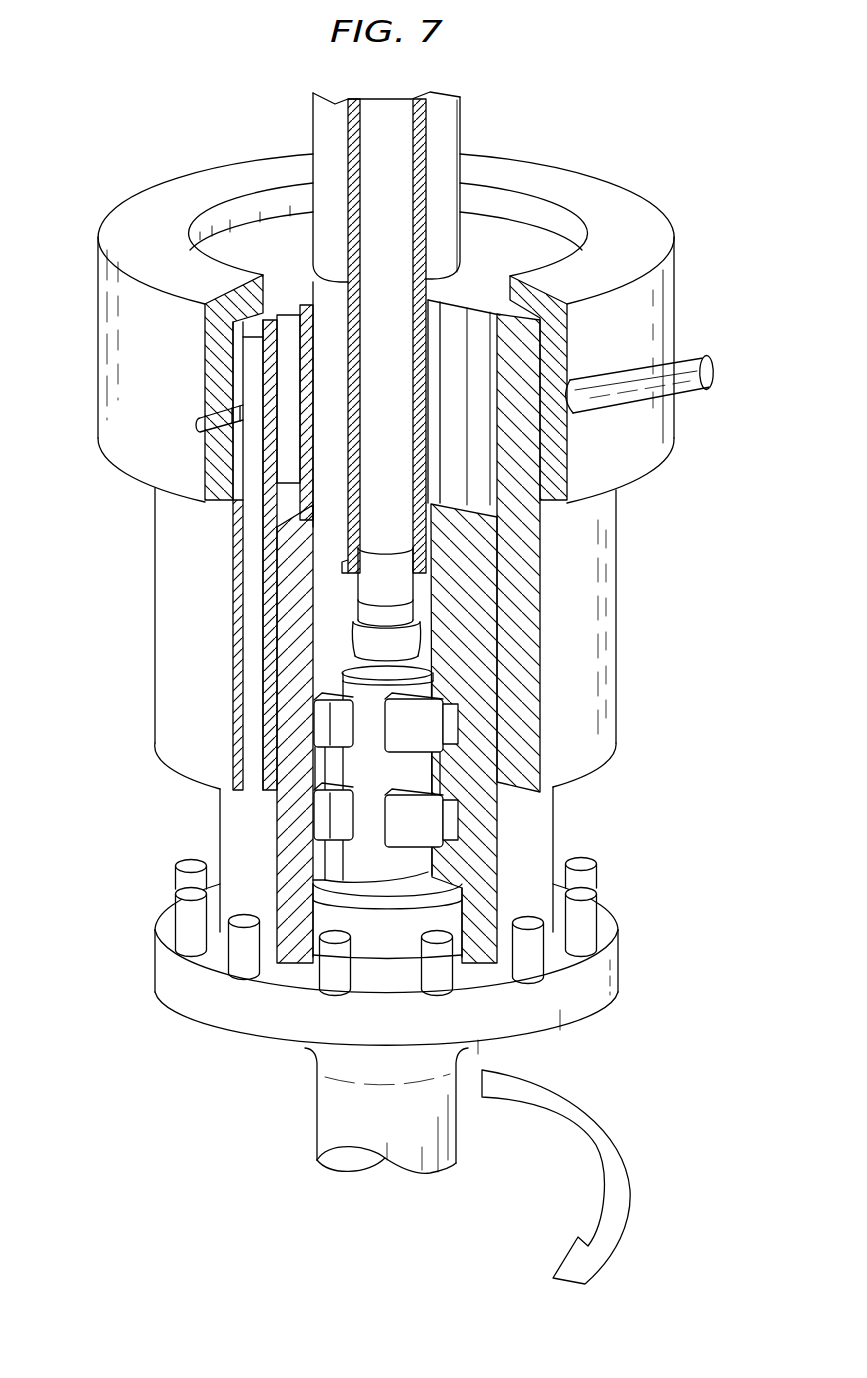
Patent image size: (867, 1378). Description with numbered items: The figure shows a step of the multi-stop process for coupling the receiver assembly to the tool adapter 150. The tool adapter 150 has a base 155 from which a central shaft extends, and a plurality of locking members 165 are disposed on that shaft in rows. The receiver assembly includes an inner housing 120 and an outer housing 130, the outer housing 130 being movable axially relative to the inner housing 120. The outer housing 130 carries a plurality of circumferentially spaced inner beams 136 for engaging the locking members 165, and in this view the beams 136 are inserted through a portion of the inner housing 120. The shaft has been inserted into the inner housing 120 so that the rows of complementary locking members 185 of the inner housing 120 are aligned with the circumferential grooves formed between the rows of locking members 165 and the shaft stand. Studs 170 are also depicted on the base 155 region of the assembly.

The inner housing 120 is at (242, 825).
The outer housing 130 is at (182, 571).
The inner beams 136 is at (333, 370).
The tool adapter 150 is at (228, 1095).
The base 155 is at (570, 1027).
The locking members 165 is at (424, 722).
The studs 170 is at (178, 920).
The complementary locking members 185 is at (436, 859).